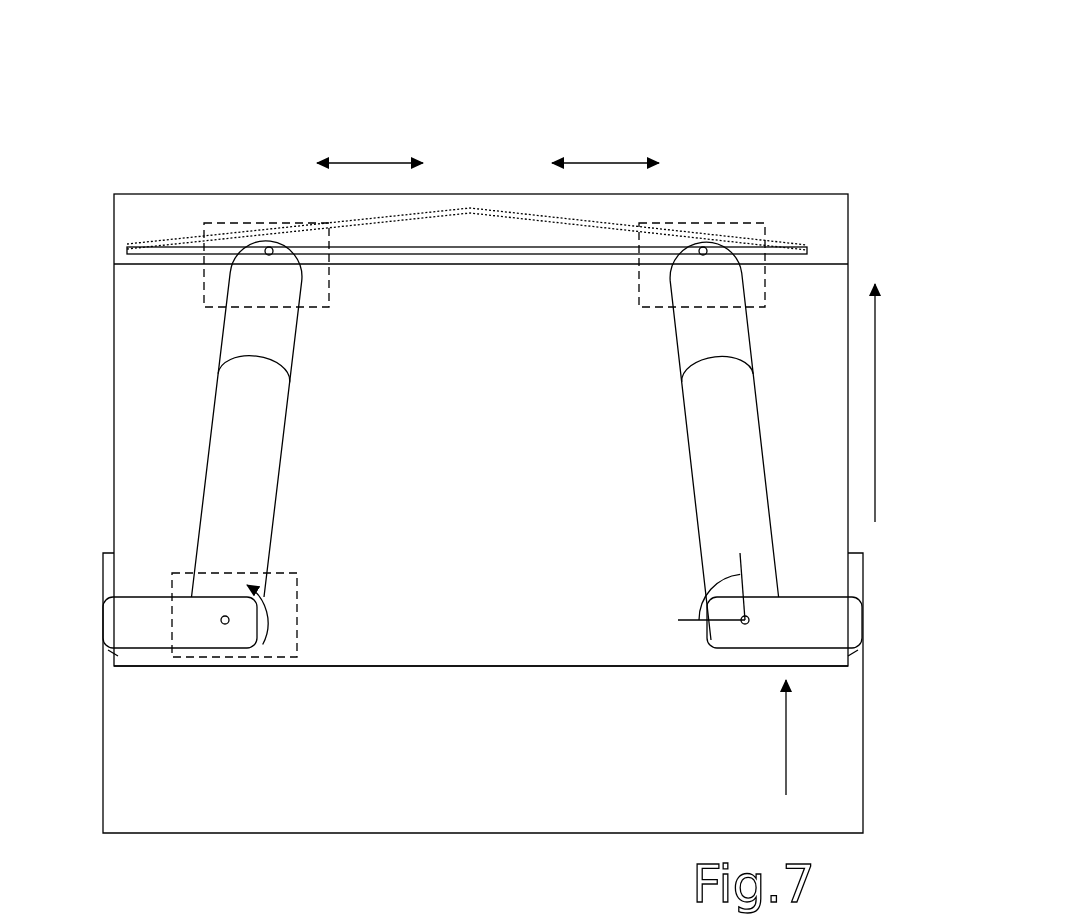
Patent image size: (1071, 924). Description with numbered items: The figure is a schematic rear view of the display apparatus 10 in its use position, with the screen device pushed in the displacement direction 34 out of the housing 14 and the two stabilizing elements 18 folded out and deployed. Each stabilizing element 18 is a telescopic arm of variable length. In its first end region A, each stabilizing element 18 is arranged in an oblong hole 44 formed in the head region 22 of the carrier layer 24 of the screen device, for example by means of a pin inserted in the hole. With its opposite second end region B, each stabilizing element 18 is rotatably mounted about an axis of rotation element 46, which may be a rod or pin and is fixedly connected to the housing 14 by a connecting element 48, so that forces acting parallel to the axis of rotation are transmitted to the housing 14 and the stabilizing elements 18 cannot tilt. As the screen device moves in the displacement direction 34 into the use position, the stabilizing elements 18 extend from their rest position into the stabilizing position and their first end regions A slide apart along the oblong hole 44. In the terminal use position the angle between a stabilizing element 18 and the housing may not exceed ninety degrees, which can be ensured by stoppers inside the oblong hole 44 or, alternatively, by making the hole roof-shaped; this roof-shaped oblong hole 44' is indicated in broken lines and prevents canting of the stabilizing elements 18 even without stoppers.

The display apparatus 10 is at (133, 120).
The housing 14 is at (865, 745).
The stabilizing element 18 is at (258, 500).
The head region 22 is at (826, 238).
The carrier layer 24 is at (473, 624).
The displacement direction 34 is at (877, 395).
The oblong hole 44 is at (516, 257).
The roof-shaped oblong hole 44' is at (467, 183).
The axis of rotation element 46 is at (221, 620).
The connecting element 48 is at (113, 655).
The first end region A is at (273, 222).
The second end region B is at (297, 630).